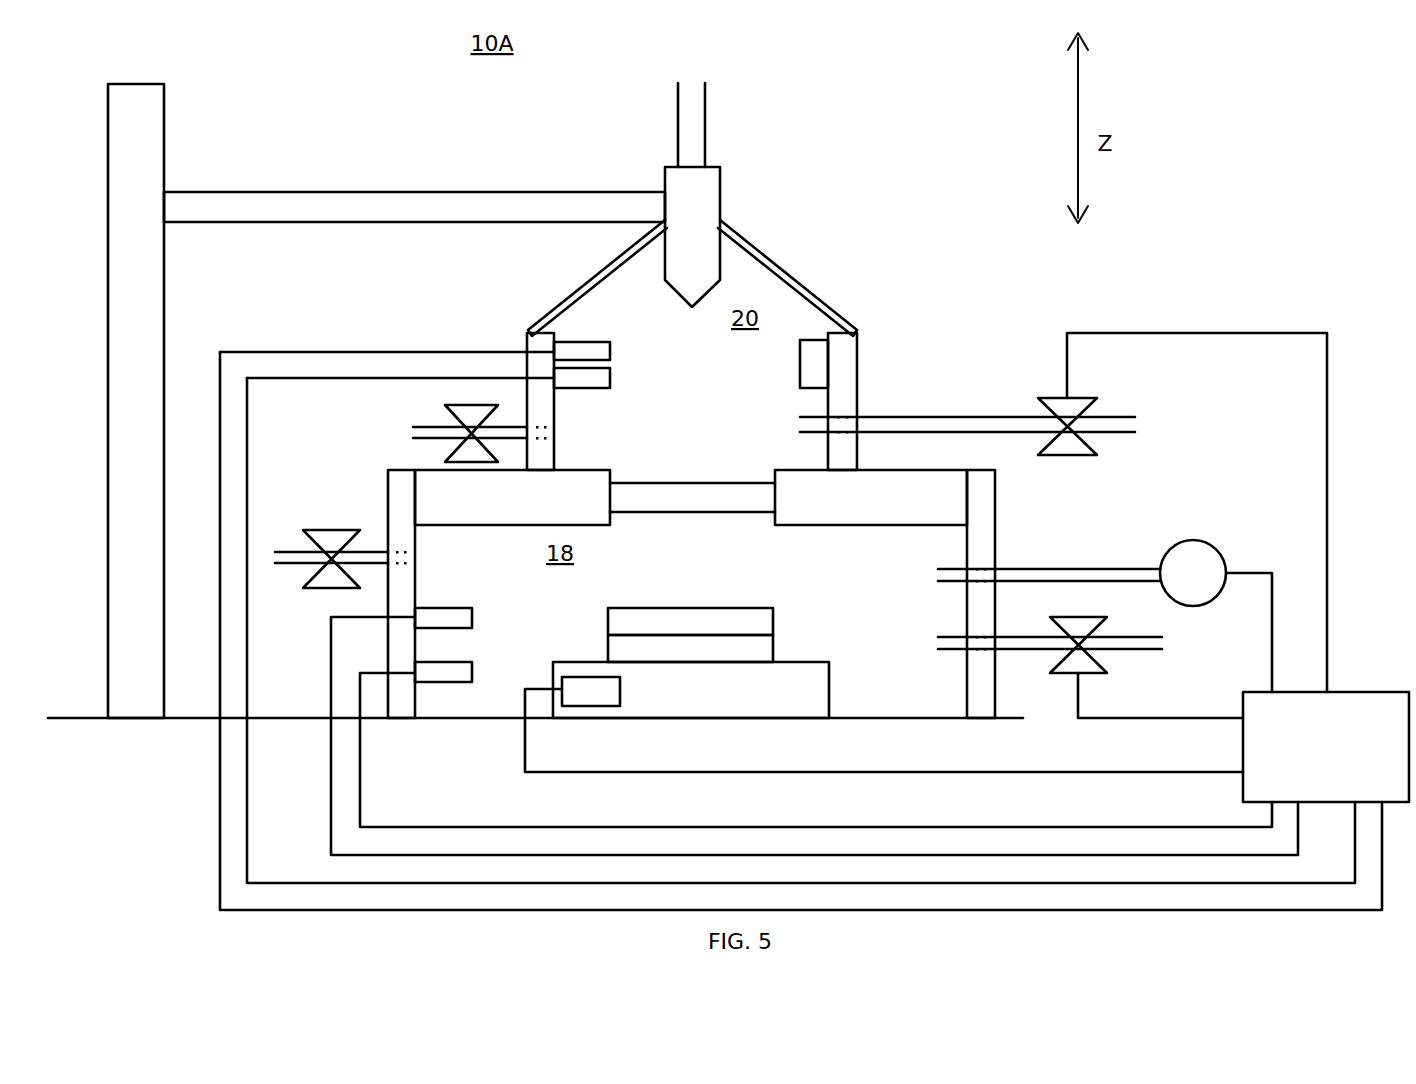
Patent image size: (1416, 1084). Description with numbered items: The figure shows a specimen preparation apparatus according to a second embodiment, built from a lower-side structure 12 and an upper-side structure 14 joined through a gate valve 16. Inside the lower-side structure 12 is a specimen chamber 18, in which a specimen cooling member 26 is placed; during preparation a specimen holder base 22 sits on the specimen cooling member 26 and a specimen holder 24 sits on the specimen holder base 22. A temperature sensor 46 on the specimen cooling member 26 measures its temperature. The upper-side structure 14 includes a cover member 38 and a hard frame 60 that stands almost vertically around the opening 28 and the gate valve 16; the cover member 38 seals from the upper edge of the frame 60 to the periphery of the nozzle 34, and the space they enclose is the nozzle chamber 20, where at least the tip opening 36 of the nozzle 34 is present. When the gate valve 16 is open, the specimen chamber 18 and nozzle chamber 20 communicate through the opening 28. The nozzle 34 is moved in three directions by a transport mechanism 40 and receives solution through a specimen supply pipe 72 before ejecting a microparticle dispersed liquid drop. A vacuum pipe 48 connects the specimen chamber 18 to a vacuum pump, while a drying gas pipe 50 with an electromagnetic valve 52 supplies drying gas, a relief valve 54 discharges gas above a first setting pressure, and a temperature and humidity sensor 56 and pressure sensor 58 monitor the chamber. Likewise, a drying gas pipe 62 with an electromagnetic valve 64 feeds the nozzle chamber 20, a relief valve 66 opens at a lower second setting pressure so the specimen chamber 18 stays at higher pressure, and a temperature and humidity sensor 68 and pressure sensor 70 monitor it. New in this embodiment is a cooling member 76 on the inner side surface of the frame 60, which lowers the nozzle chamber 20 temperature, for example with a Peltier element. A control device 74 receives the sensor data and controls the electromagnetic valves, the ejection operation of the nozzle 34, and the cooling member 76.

The lower-side structure 12 is at (995, 552).
The upper-side structure 14 is at (832, 268).
The gate valve 16 is at (645, 483).
The specimen chamber 18 is at (499, 594).
The nozzle chamber 20 is at (692, 401).
The specimen holder base 22 is at (773, 648).
The specimen holder 24 is at (773, 618).
The specimen cooling member 26 is at (830, 692).
The opening 28 is at (610, 524).
The nozzle 34 is at (720, 202).
The tip opening 36 is at (668, 290).
The cover member 38 is at (785, 270).
The transport mechanism 40 is at (164, 137).
The temperature sensor 46 is at (593, 706).
The vacuum pipe 48 is at (1085, 569).
The drying gas pipe 50 is at (1015, 652).
The electromagnetic valve 52 is at (1107, 618).
The relief valve 54 is at (322, 530).
The temperature and humidity sensor 56 is at (472, 617).
The pressure sensor 58 is at (472, 672).
The frame 60 is at (857, 360).
The drying gas pipe 62 is at (940, 416).
The electromagnetic valve 64 is at (1076, 398).
The relief valve 66 is at (445, 408).
The temperature and humidity sensor 68 is at (610, 352).
The pressure sensor 70 is at (610, 381).
The specimen supply pipe 72 is at (705, 130).
The control device 74 is at (1360, 692).
The cooling member 76 is at (815, 335).